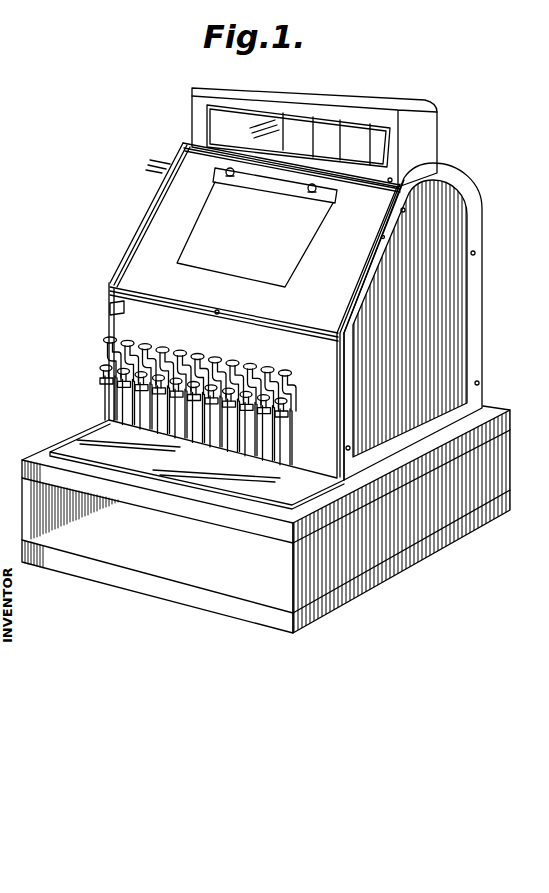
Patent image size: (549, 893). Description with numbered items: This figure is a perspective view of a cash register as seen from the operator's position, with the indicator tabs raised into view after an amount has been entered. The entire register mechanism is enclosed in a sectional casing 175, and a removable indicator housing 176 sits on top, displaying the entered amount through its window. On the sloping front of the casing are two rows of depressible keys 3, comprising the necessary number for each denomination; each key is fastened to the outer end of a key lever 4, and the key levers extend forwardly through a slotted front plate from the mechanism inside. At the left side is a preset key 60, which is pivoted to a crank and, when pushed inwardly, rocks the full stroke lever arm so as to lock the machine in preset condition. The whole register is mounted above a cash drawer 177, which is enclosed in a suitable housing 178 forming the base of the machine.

The depressible keys 3 is at (106, 338).
The key levers 4 is at (112, 387).
The preset key 60 is at (108, 311).
The sectional casing 175 is at (461, 283).
The indicator housing 176 is at (440, 117).
The cash drawer 177 is at (153, 562).
The housing 178 is at (370, 563).